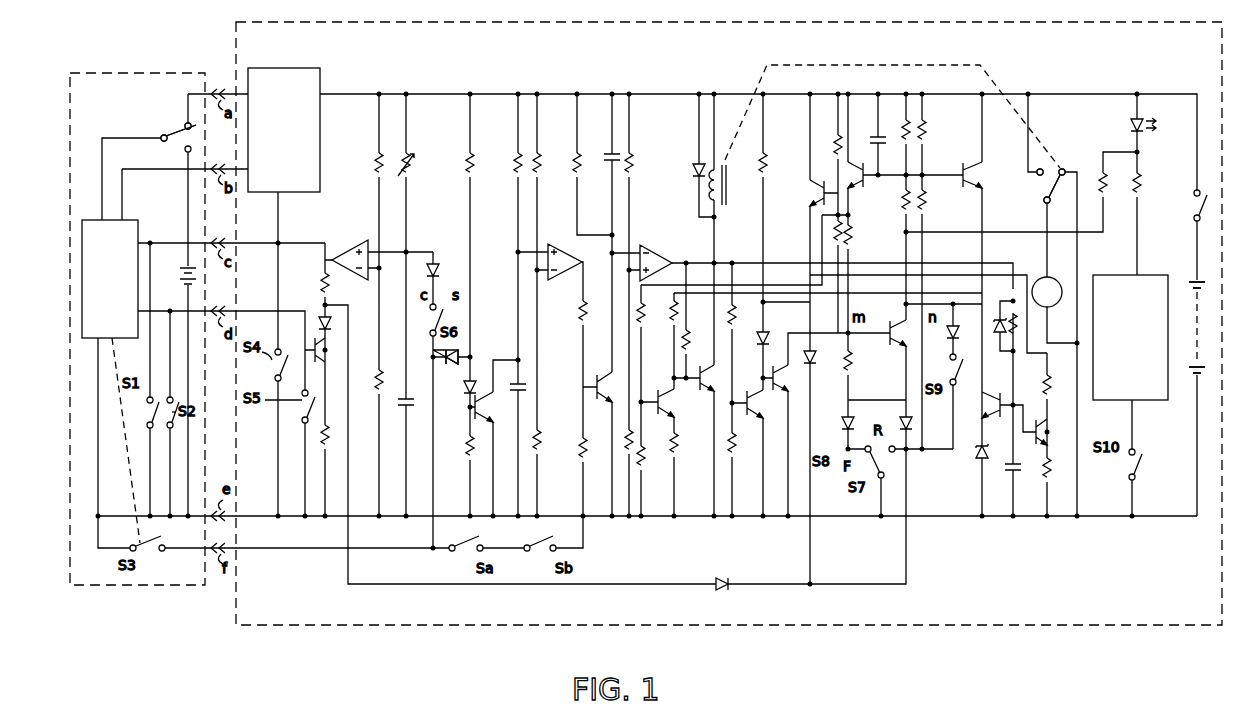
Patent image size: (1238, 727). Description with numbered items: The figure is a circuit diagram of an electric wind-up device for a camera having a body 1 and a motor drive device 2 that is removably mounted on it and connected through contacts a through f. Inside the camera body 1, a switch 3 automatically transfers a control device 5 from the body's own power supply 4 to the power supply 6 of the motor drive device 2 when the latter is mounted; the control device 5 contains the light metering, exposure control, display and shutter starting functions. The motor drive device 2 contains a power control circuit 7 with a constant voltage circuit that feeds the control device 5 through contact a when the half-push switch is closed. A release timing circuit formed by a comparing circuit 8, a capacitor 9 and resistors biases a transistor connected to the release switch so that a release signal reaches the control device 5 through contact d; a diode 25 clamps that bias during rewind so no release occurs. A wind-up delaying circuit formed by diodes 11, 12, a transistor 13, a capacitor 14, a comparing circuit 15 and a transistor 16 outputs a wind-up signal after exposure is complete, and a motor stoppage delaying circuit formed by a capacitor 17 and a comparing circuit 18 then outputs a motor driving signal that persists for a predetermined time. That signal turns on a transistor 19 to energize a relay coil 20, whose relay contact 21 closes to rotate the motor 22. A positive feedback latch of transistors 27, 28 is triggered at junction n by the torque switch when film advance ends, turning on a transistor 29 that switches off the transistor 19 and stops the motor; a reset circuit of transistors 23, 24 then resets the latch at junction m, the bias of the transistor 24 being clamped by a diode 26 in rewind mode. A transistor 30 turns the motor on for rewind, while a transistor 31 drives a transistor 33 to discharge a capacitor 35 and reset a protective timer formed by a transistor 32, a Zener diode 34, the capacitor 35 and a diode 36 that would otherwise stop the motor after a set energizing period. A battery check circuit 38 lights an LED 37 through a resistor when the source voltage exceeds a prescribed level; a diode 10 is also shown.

The camera body 1 is at (150, 586).
The motor drive device 2 is at (405, 626).
The switch 3 is at (174, 133).
The power supply 4 is at (178, 278).
The control device 5 is at (128, 220).
The power supply 6 is at (1190, 280).
The power control circuit 7 is at (303, 68).
The comparing circuit 8 is at (352, 242).
The capacitor 9 is at (397, 405).
The diode 10 is at (440, 270).
The diode 11 is at (455, 365).
The diode 12 is at (462, 395).
The transistor 13 is at (488, 395).
The capacitor 14 is at (527, 388).
The comparing circuit 15 is at (565, 280).
The transistor 16 is at (600, 402).
The capacitor 17 is at (603, 156).
The comparing circuit 18 is at (650, 248).
The transistor 19 is at (702, 393).
The relay coil 20 is at (727, 197).
The relay contact 21 is at (1046, 188).
The motor 22 is at (1034, 283).
The transistor 23 is at (770, 385).
The transistor 24 is at (760, 405).
The diode 25 is at (722, 576).
The diode 26 is at (802, 352).
The transistor 27 is at (890, 345).
The transistor 28 is at (860, 187).
The transistor 29 is at (660, 393).
The transistor 30 is at (965, 170).
The transistor 31 is at (820, 197).
The transistor 32 is at (995, 412).
The transistor 33 is at (1033, 425).
The Zener diode 34 is at (975, 458).
The capacitor 35 is at (1008, 472).
The diode 36 is at (998, 318).
The LED 37 is at (1130, 126).
The battery check circuit 38 is at (1143, 402).